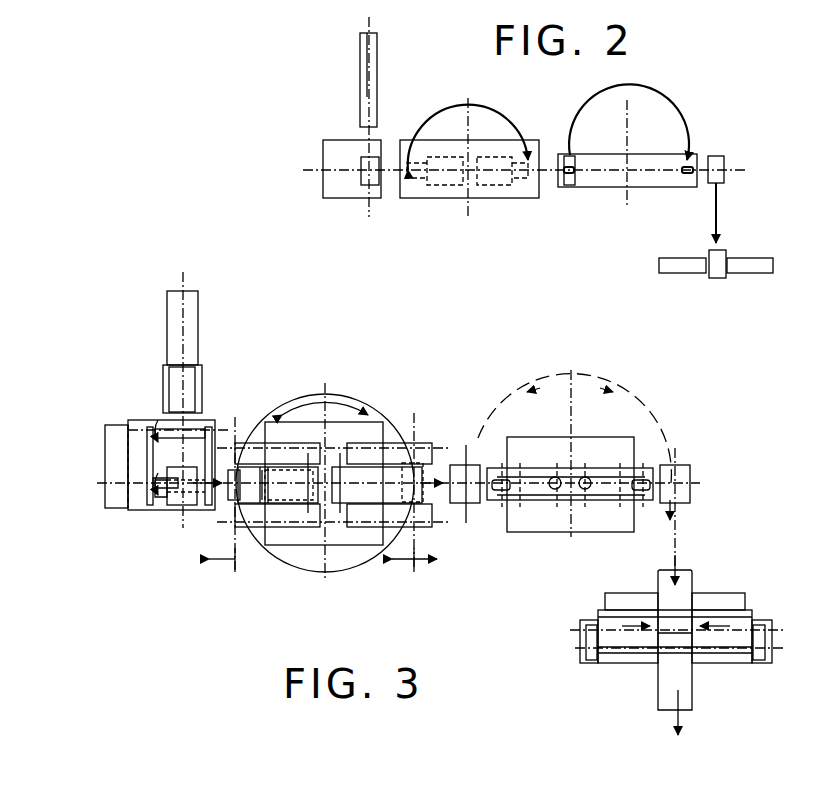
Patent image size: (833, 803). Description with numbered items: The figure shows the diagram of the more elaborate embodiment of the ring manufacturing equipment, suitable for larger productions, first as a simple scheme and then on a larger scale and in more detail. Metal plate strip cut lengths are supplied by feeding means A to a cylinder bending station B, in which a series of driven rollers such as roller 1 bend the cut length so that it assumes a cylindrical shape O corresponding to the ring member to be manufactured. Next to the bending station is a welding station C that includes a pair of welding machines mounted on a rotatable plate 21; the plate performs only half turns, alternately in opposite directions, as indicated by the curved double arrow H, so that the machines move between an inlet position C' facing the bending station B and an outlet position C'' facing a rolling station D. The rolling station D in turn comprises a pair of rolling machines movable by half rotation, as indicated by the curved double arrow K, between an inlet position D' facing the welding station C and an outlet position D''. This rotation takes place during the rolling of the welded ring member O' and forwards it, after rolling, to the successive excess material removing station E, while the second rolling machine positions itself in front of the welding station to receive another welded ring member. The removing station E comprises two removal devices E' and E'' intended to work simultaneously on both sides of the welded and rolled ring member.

In FIG. 2, the feeding means A is at (360, 70).
In FIG. 3, the feeding means A is at (176, 330).
In FIG. 2, the cylinder bending station B is at (338, 181).
In FIG. 3, the cylinder bending station B is at (160, 506).
In FIG. 3, the roller 1 is at (153, 483).
In FIG. 3, the cylindrical shape O is at (188, 512).
In FIG. 2, the welding station C is at (469, 132).
In FIG. 3, the welding station C is at (325, 440).
In FIG. 2, the inlet position C' is at (435, 202).
In FIG. 3, the inlet position C' is at (274, 516).
In FIG. 2, the outlet position C'' is at (503, 202).
In FIG. 3, the outlet position C'' is at (387, 458).
In FIG. 3, the curved double arrow H is at (306, 404).
In FIG. 3, the rotatable plate 21 is at (357, 568).
In FIG. 3, the welded ring member O' is at (582, 479).
In FIG. 2, the rolling station D is at (641, 152).
In FIG. 3, the rolling station D is at (570, 420).
In FIG. 2, the inlet position D' is at (577, 197).
In FIG. 3, the inlet position D' is at (490, 519).
In FIG. 2, the outlet position D'' is at (678, 203).
In FIG. 3, the outlet position D'' is at (643, 519).
In FIG. 3, the curved double arrow K is at (590, 382).
In FIG. 2, the excess material removing station E is at (717, 306).
In FIG. 3, the excess material removing station E is at (677, 633).
In FIG. 2, the removal device E' is at (680, 292).
In FIG. 3, the removal device E' is at (619, 649).
In FIG. 2, the removal device E'' is at (750, 292).
In FIG. 3, the removal device E'' is at (732, 649).